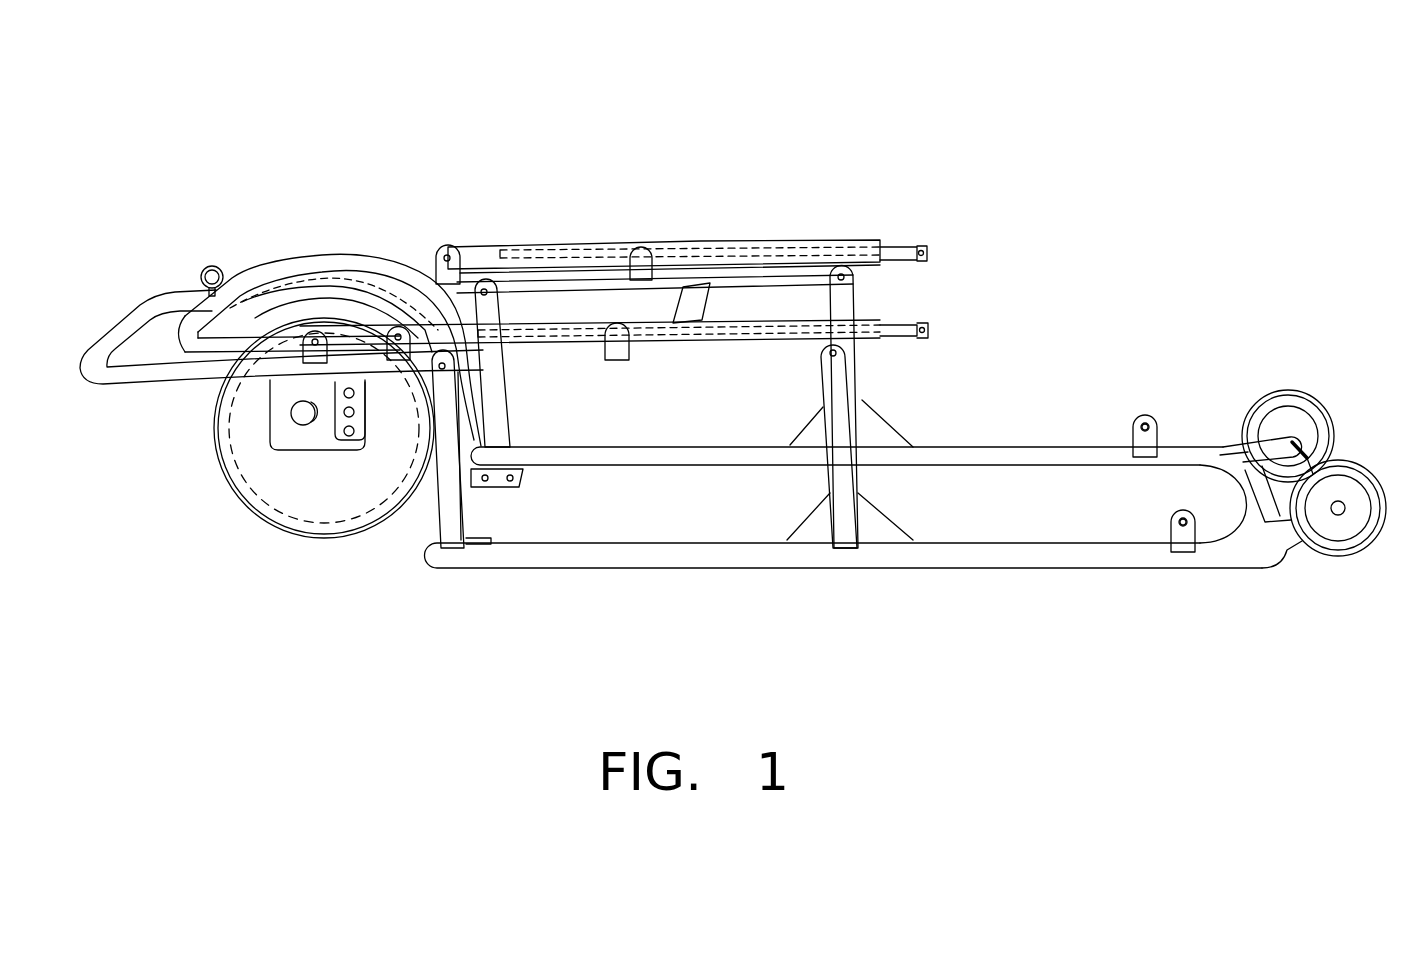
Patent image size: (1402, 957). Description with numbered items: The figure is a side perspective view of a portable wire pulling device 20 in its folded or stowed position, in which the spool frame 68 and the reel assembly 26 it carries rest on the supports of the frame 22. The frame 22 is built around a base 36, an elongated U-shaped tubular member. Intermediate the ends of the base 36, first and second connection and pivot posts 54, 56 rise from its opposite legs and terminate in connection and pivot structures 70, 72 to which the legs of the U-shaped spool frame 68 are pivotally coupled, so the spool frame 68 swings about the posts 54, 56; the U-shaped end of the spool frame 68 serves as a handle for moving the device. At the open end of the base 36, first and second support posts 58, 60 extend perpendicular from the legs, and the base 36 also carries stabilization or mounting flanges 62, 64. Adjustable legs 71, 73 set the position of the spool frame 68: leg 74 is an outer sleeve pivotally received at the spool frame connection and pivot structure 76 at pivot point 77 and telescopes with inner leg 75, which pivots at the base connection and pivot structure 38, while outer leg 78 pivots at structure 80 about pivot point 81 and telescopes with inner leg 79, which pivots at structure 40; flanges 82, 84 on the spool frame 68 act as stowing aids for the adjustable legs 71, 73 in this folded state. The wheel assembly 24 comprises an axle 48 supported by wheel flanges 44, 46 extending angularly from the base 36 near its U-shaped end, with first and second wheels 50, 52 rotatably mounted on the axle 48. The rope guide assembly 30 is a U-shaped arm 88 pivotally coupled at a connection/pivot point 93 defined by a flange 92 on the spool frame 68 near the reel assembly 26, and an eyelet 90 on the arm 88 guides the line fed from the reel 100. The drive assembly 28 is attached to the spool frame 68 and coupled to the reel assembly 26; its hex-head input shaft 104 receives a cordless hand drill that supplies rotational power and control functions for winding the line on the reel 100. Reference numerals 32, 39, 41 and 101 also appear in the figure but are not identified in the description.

The portable wire pulling device 20 is at (990, 146).
The frame assembly 22 is at (583, 605).
The wheel assembly 24 is at (1342, 364).
The reel assembly 26 is at (360, 158).
The drive assembly 28 is at (314, 492).
The rope guide assembly 30 is at (148, 215).
The back frame 32 is at (962, 278).
The base 36 is at (1068, 556).
The first connection and pivot structure 38 is at (1128, 446).
The upper pivot pin 39 is at (1146, 425).
The second connection and pivot structure 40 is at (1181, 542).
The lower pivot pin 41 is at (1180, 520).
The wheel flange 44 is at (1243, 452).
The wheel flange 46 is at (1281, 528).
The axle 48 is at (1308, 450).
The first wheel 50 is at (1282, 402).
The second wheel 52 is at (1347, 545).
The first connection and pivot post 54 is at (855, 386).
The second connection and pivot post 56 is at (862, 495).
The first support post 58 is at (497, 415).
The second support post 60 is at (452, 552).
The stabilization or mounting flange 62 is at (500, 484).
The stabilization or mounting flange 64 is at (483, 537).
The spool frame 68 is at (125, 380).
The connection and pivot structure 70 is at (854, 283).
The adjustable leg 71 is at (740, 222).
The connection and pivot structure 72 is at (825, 358).
The adjustable leg 73 is at (798, 300).
The leg 74 is at (485, 257).
The leg 75 is at (860, 280).
The first connection and pivot structure 76 is at (452, 265).
The pivot point 77 is at (446, 250).
The leg 78 is at (409, 322).
The leg 79 is at (905, 331).
The second connection and pivot structure 80 is at (390, 330).
The pivot point 81 is at (397, 292).
The first flange 82 is at (639, 258).
The second flange 84 is at (617, 353).
The U-shaped arm 88 is at (282, 262).
The eyelet 90 is at (215, 264).
The flange 92 is at (270, 353).
The connection/pivot point 93 is at (314, 330).
The reel 100 is at (280, 487).
The hub knob 101 is at (297, 423).
The input shaft 104 is at (362, 415).